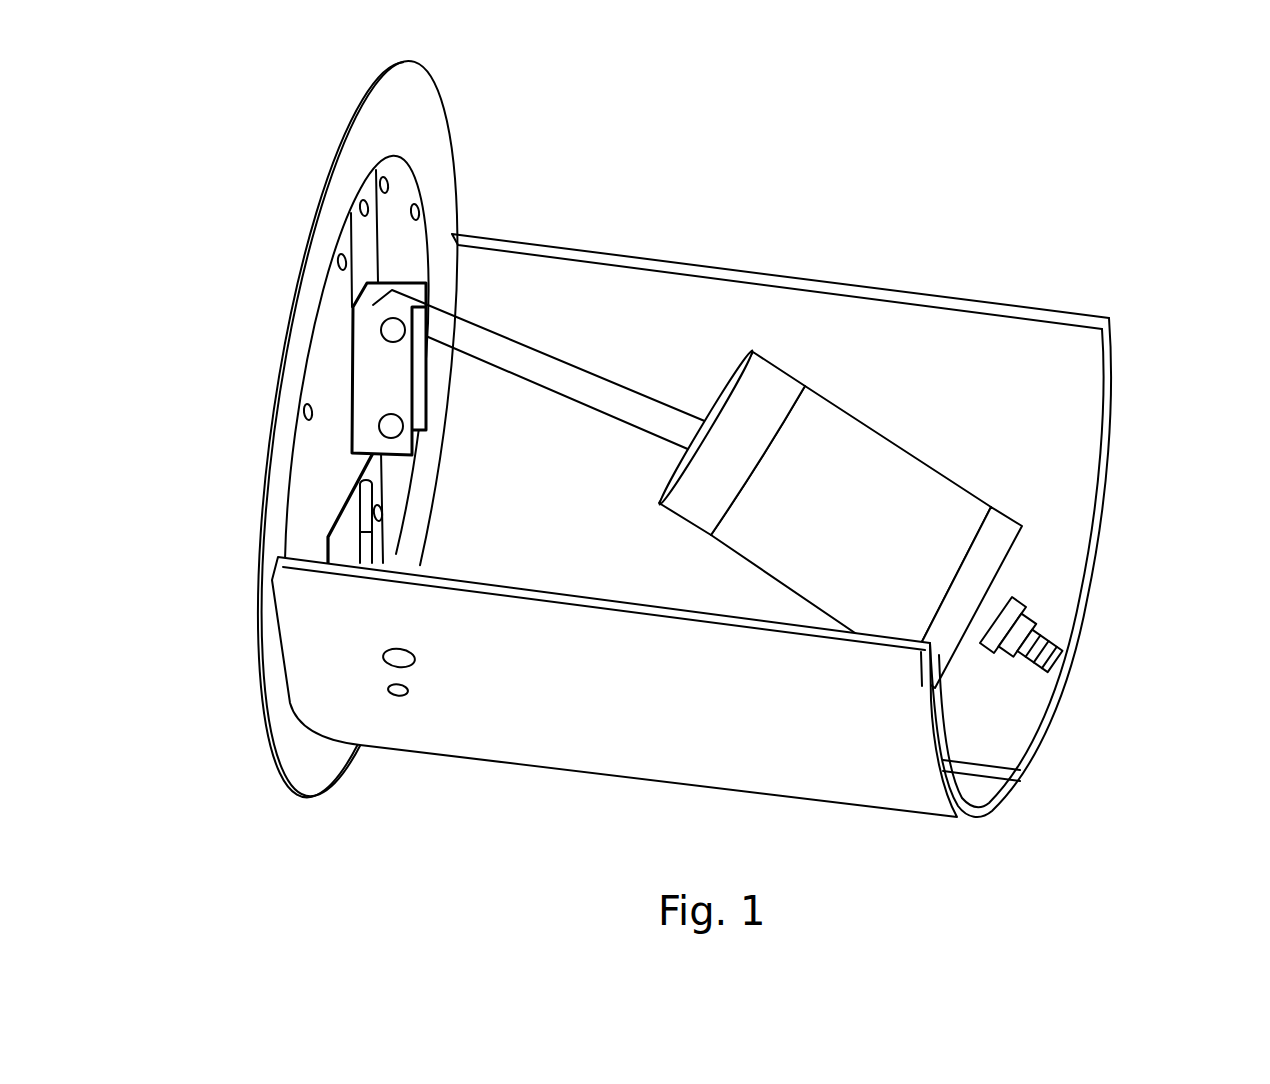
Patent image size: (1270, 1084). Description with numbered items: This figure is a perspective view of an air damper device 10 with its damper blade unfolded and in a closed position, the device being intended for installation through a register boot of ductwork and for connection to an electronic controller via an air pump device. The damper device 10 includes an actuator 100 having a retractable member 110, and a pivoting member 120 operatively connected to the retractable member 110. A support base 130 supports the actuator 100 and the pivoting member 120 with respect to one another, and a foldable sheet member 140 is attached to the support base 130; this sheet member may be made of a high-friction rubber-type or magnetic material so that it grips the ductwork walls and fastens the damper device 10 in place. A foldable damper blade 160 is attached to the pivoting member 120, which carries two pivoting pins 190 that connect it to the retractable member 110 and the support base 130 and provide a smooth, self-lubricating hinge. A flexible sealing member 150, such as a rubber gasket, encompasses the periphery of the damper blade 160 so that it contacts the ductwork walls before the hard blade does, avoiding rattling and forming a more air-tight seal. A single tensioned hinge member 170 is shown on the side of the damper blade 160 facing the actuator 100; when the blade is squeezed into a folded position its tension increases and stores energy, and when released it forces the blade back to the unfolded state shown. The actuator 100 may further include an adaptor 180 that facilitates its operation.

The air damper device 10 is at (893, 163).
The actuator 100 is at (895, 452).
The retractable member 110 is at (553, 356).
The pivoting member 120 is at (373, 355).
The support base 130 is at (952, 660).
The foldable sheet member 140 is at (548, 722).
The sealing member 150 is at (374, 82).
The foldable damper blade 160 is at (317, 457).
The tensioned hinge member 170 is at (347, 514).
The adaptor 180 is at (1043, 640).
The pivoting pins 190 is at (396, 334).